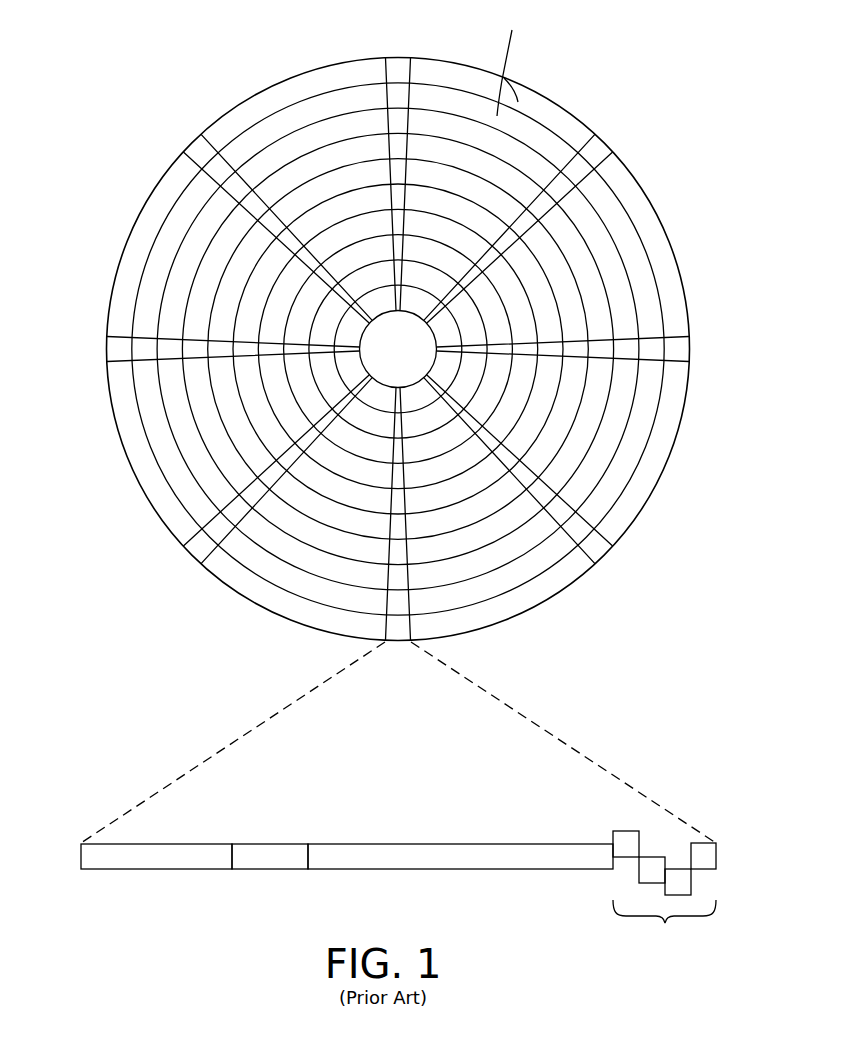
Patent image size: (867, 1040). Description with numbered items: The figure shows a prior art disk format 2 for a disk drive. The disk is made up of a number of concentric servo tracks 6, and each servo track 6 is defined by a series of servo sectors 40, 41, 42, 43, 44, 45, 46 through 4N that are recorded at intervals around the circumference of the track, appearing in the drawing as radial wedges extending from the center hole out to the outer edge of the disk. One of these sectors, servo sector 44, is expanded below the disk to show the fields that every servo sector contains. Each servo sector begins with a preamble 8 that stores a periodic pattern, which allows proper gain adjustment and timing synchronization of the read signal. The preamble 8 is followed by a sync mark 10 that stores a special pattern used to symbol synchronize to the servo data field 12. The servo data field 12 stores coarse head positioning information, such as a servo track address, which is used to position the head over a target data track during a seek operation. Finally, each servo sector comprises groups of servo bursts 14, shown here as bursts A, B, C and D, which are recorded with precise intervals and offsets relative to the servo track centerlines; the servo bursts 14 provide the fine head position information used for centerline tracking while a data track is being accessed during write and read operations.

The disk format 2 is at (185, 62).
The servo sector 40 is at (398, 66).
The servo sector 41 is at (597, 150).
The servo sector 42 is at (682, 352).
The servo sector 43 is at (597, 550).
The servo sector 44 is at (270, 712).
The servo sector 45 is at (195, 552).
The servo sector 46 is at (105, 349).
The servo sector 4N is at (198, 150).
The servo track 6 is at (510, 63).
The preamble 8 is at (137, 869).
The sync mark 10 is at (266, 869).
The servo data field 12 is at (449, 869).
The servo bursts 14 is at (603, 815).